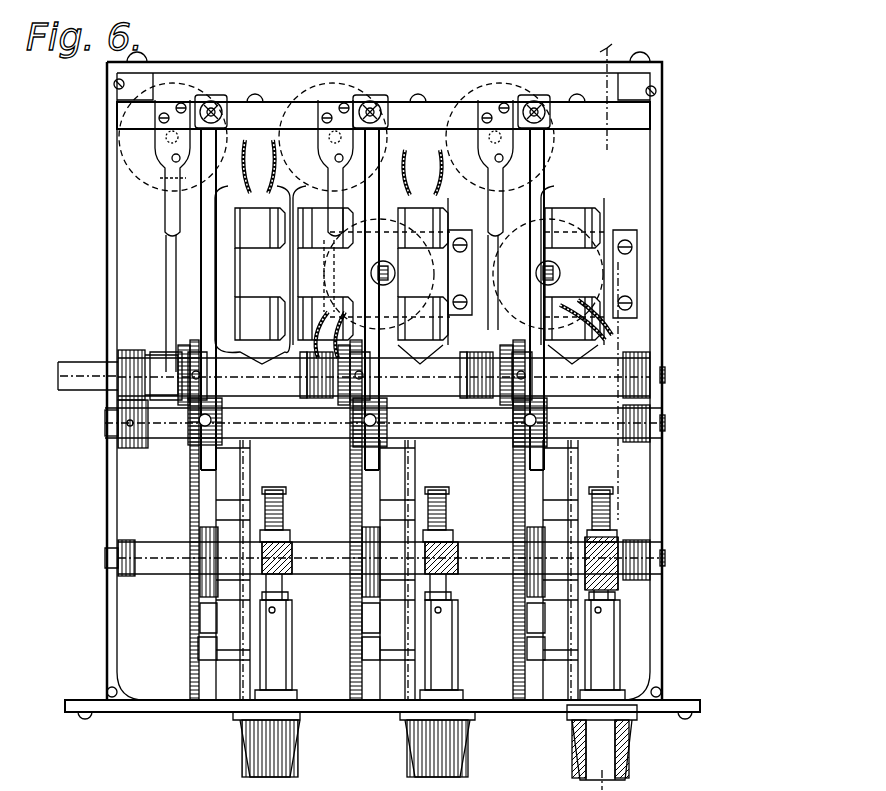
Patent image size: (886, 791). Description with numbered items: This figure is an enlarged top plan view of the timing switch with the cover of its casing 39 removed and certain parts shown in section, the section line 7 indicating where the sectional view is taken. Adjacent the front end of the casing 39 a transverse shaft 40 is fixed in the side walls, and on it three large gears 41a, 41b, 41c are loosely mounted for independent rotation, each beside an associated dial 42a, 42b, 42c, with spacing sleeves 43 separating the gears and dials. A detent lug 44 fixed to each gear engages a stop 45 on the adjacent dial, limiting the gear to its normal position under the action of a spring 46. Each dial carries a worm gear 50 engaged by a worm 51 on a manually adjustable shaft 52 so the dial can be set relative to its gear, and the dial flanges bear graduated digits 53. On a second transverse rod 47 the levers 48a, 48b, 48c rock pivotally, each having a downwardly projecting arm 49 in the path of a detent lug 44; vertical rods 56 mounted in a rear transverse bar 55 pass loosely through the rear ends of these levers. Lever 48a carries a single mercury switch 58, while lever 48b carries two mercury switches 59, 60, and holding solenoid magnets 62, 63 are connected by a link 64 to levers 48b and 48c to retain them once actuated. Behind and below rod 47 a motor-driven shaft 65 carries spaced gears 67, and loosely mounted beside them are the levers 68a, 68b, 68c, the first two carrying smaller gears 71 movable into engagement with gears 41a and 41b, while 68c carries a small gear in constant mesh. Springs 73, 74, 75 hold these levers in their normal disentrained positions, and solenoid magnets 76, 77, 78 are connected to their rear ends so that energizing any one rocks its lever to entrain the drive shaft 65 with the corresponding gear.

The section line 7 is at (609, 404).
The casing 39 is at (113, 641).
The shaft 40 is at (105, 556).
The large gear 41a is at (205, 645).
The large gear 41b is at (365, 640).
The large gear 41c is at (520, 620).
The dial 42a is at (247, 457).
The dial 42b is at (397, 570).
The dial 42c is at (576, 457).
The spacing sleeve 43 is at (167, 572).
The detent lug 44 is at (207, 655).
The stop 45 is at (200, 618).
The spring 46 is at (190, 512).
The second transverse rod 47 is at (600, 428).
The lever 48a is at (203, 316).
The lever 48b is at (438, 358).
The lever 48c is at (595, 310).
The arm 49 is at (207, 460).
The worm gear 50 is at (284, 500).
The worm 51 is at (292, 545).
The manually adjustable shaft 52 is at (283, 596).
The digits 53 is at (248, 662).
The transverse bar 55 is at (642, 115).
The vertical rod 56 is at (211, 97).
The mercury switch 58 is at (260, 274).
The mercury switch 59 is at (325, 274).
The mercury switch 60 is at (467, 274).
The solenoid magnet 62 is at (542, 274).
The solenoid magnet 63 is at (533, 225).
The link 64 is at (392, 270).
The shaft 65 is at (92, 376).
The gear 67 is at (168, 372).
The lever 68a is at (168, 263).
The lever 68b is at (419, 208).
The lever 68c is at (547, 218).
The smaller gear 71 is at (210, 392).
The spring 73 is at (172, 161).
The spring 74 is at (406, 170).
The spring 75 is at (496, 163).
The solenoid magnet 76 is at (173, 88).
The solenoid magnet 77 is at (333, 88).
The solenoid magnet 78 is at (502, 88).